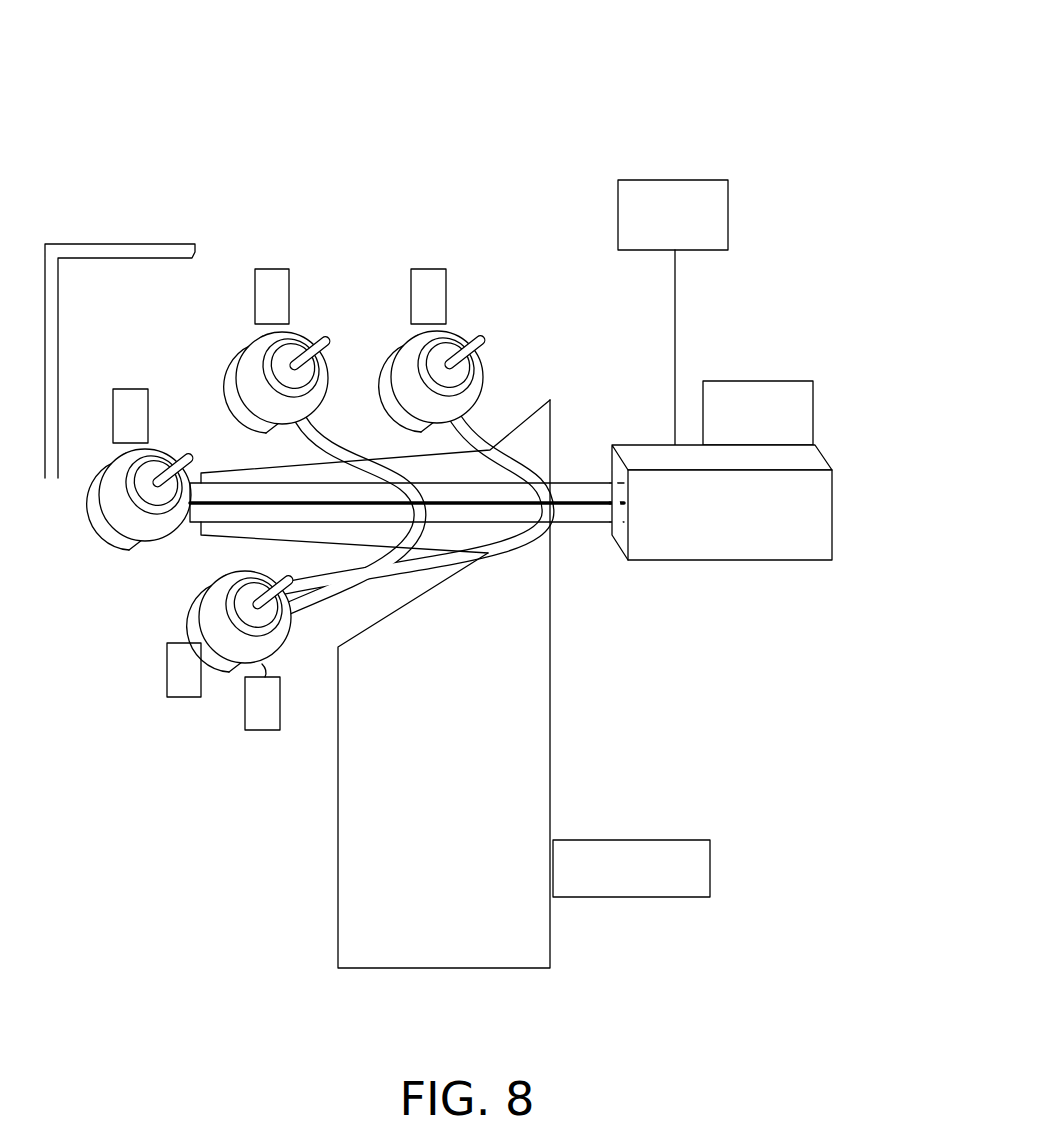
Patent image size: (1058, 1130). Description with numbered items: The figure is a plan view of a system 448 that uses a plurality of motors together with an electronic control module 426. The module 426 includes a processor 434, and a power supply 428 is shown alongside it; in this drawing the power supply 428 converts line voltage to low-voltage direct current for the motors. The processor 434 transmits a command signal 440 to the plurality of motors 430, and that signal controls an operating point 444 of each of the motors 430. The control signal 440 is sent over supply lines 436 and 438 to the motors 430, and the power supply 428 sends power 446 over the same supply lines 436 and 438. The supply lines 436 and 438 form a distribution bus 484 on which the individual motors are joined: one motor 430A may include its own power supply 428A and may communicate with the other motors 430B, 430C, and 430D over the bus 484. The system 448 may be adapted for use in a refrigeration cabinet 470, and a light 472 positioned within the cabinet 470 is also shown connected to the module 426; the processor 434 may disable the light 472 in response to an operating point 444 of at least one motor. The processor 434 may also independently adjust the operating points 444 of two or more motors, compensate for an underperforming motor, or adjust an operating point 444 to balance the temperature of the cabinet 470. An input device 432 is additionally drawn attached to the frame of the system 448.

The system 448 is at (130, 83).
The refrigeration cabinet 470 is at (95, 243).
The operating point 444 is at (275, 269).
The power supply 428A is at (268, 732).
The motors 430 is at (284, 475).
The motor 430A is at (187, 619).
The motor 430B is at (172, 450).
The motor 430C is at (322, 388).
The motor 430D is at (467, 330).
The supply line 438 is at (576, 482).
The power 446 is at (573, 557).
The command signal 440 is at (607, 535).
The supply line 436 is at (470, 523).
The distribution bus 484 is at (600, 460).
The electronic control module 426 is at (773, 404).
The light 472 is at (713, 180).
The processor 434 is at (767, 381).
The power supply 428 is at (848, 537).
The input device 432 is at (688, 840).